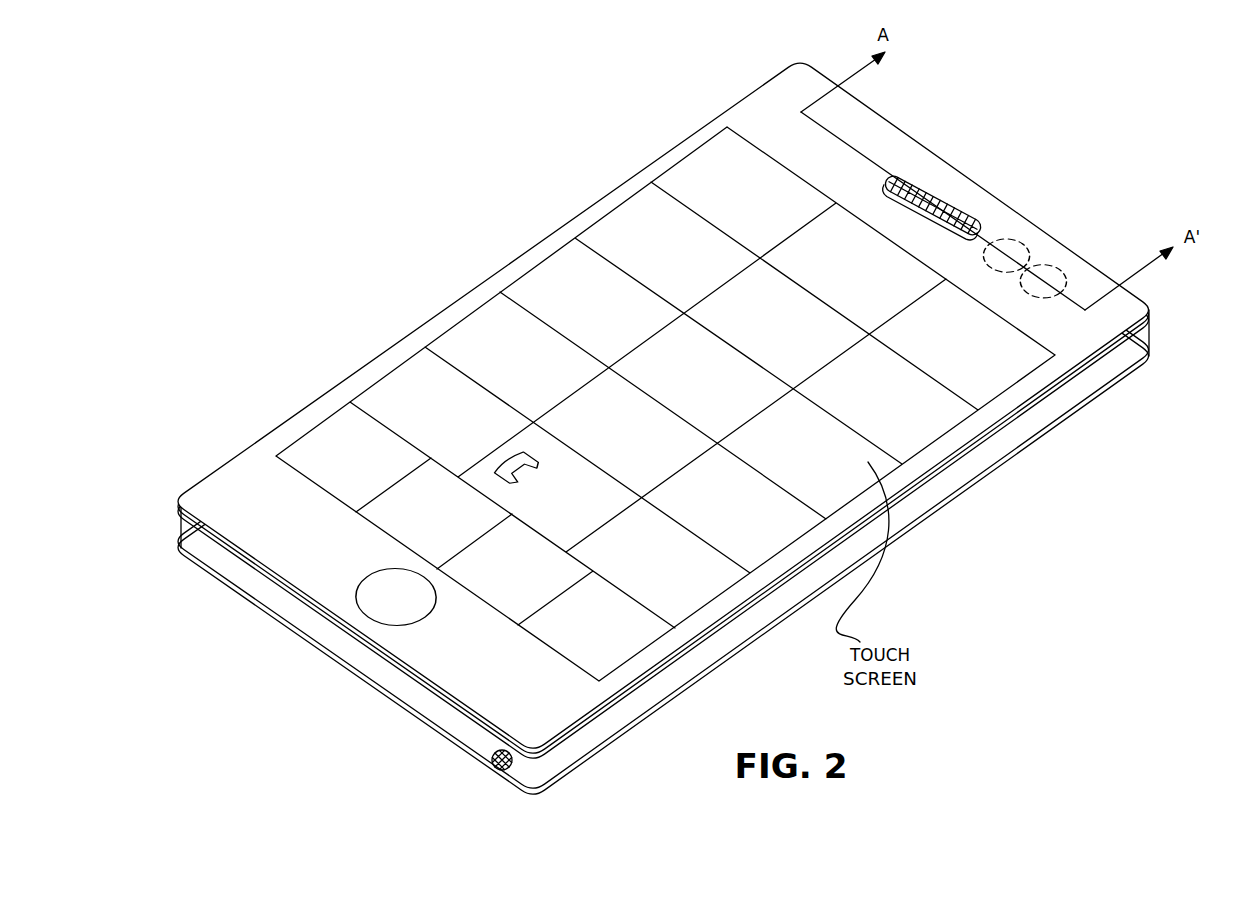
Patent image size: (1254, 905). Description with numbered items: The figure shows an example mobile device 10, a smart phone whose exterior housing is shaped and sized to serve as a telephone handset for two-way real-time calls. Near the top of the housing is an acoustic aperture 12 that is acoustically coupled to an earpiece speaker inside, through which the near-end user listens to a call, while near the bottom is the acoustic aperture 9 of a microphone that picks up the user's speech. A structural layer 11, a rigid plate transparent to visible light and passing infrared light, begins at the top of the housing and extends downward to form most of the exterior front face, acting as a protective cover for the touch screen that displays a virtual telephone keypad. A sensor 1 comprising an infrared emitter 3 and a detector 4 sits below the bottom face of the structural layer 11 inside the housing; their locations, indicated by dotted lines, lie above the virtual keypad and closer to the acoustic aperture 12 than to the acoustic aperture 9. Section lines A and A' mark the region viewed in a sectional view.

The mobile device 10 is at (697, 423).
The acoustic aperture 12 is at (906, 178).
The sensor 1 is at (1095, 204).
The infrared emitter 3 is at (1013, 250).
The detector 4 is at (1058, 272).
The structural layer 11 is at (1072, 335).
The acoustic aperture 9 is at (496, 764).